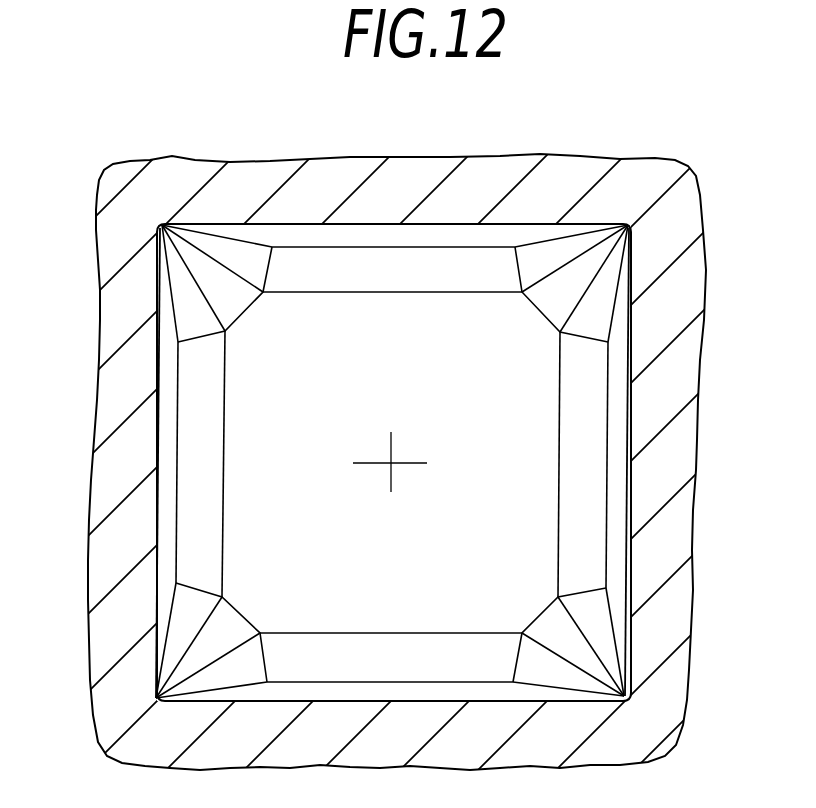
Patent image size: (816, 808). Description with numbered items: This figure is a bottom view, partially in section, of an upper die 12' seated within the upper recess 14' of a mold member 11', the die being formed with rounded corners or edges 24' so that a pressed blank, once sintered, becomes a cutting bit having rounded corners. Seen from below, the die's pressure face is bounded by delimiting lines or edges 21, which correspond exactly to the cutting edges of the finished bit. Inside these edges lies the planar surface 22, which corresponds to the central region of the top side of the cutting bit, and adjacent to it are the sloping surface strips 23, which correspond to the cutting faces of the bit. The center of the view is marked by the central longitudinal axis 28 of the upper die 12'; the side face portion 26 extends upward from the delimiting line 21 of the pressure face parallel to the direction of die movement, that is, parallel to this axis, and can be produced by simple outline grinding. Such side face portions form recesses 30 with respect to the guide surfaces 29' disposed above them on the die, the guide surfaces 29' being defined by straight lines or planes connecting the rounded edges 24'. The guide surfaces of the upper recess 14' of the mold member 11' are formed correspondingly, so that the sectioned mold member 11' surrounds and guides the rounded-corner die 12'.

The mold member 11' is at (408, 445).
The upper die 12' is at (394, 395).
The upper recess 14' is at (562, 465).
The delimiting lines or edges 21 is at (175, 360).
The planar surface 22 is at (500, 392).
The sloping surface strips 23 is at (373, 283).
The rounded corners or edges 24' is at (174, 220).
The side face portion 26 is at (318, 240).
The central longitudinal axis 28 is at (390, 467).
The guide surfaces 29' is at (93, 463).
The recesses 30 is at (617, 498).